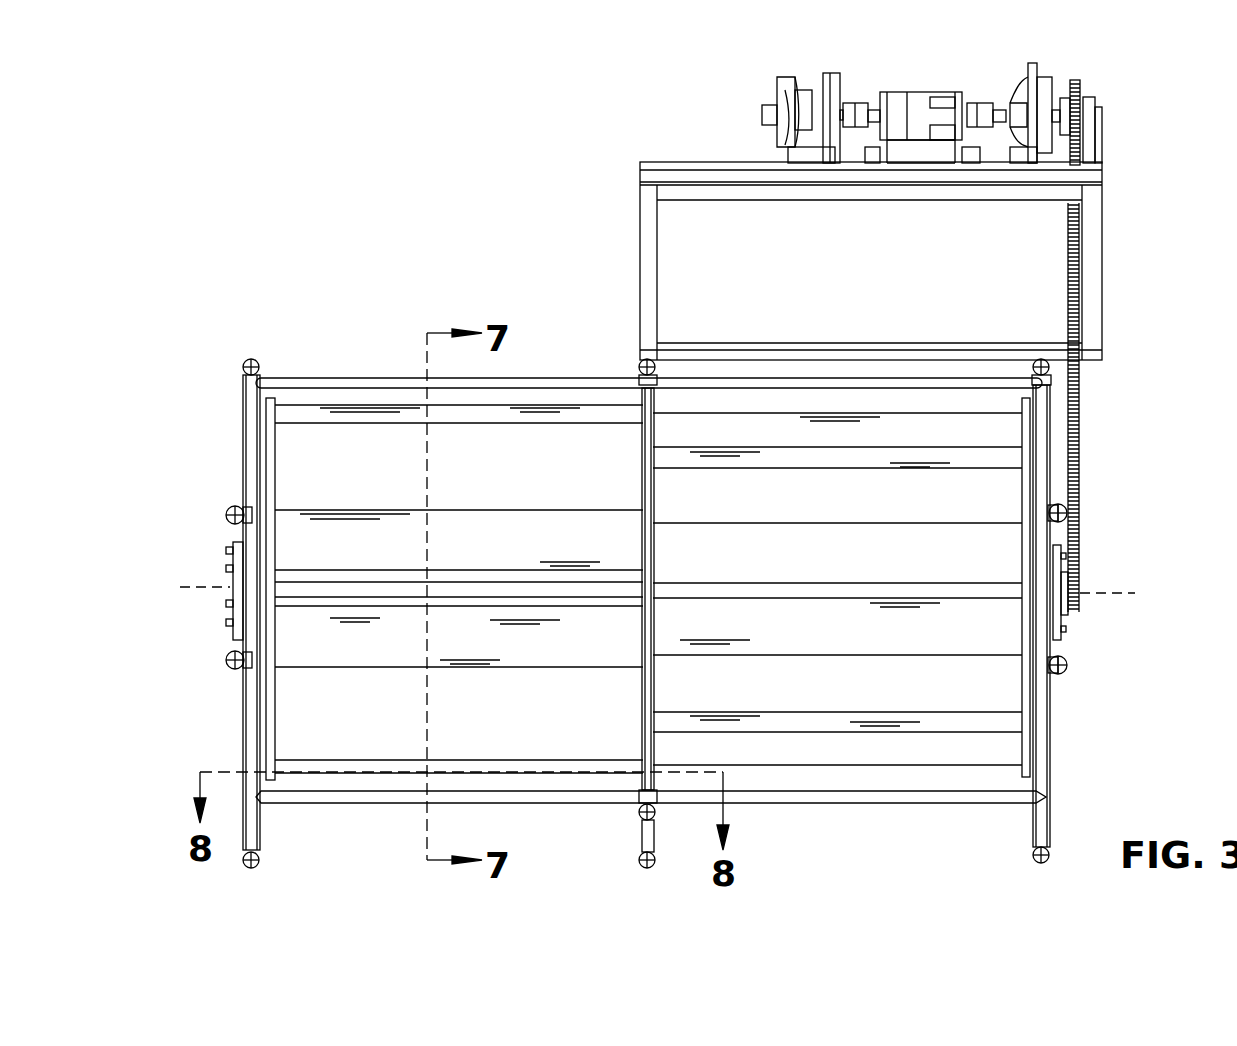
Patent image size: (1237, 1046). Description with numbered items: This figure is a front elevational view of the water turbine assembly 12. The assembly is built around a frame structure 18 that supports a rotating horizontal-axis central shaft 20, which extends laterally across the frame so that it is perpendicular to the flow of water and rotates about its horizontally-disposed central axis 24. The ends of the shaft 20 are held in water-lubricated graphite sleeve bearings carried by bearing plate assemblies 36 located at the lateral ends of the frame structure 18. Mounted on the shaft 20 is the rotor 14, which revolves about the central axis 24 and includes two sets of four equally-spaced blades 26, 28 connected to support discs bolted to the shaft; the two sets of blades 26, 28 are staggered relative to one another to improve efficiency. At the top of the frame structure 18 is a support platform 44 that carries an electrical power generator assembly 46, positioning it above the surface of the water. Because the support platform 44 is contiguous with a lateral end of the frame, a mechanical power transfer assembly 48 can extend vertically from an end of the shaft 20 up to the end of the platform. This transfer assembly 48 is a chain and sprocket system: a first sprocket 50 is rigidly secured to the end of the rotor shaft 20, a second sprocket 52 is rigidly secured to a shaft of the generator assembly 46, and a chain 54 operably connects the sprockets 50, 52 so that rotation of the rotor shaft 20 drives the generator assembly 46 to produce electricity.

The water turbine assembly 12 is at (412, 200).
The rotor 14 is at (375, 405).
The frame structure 18 is at (1052, 800).
The central shaft 20 is at (942, 600).
The central axis 24 is at (1110, 590).
The blades 26 is at (347, 775).
The blades 28 is at (848, 732).
The bearing plate assemblies 36 is at (233, 560).
The support platform 44 is at (640, 232).
The electrical power generator assembly 46 is at (905, 90).
The mechanical power transfer assembly 48 is at (1083, 262).
The first sprocket 50 is at (1068, 575).
The second sprocket 52 is at (1080, 82).
The chain 54 is at (1080, 422).